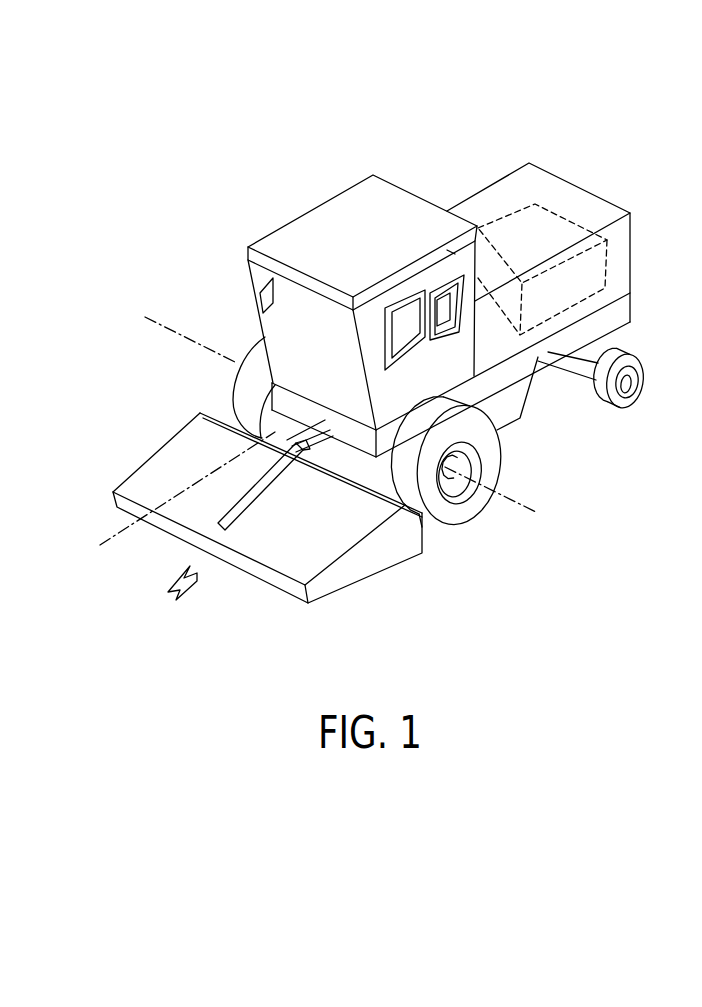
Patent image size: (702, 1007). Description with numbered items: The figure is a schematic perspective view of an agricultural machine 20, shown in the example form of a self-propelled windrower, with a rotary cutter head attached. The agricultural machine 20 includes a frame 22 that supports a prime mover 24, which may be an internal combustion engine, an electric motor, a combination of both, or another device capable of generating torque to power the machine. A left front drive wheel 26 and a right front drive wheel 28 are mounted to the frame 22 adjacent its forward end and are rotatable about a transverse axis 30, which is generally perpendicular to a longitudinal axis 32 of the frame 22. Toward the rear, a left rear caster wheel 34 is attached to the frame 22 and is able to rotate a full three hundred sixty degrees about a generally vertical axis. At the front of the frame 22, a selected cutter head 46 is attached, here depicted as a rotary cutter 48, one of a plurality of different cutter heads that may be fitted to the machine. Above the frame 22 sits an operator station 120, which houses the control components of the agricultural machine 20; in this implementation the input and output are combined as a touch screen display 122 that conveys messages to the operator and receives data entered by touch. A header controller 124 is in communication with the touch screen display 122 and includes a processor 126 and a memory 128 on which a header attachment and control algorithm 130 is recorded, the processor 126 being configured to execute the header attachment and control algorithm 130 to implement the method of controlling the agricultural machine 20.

The agricultural machine 20 is at (278, 82).
The frame 22 is at (538, 356).
The prime mover 24 is at (569, 215).
The left front drive wheel 26 is at (443, 513).
The right front drive wheel 28 is at (247, 392).
The transverse axis 30 is at (523, 523).
The longitudinal axis 32 is at (112, 540).
The left rear caster wheel 34 is at (622, 408).
The cutter head 46 is at (263, 583).
The rotary cutter 48 is at (188, 463).
The operator station 120 is at (388, 182).
The touch screen display 122 is at (258, 292).
The header controller 124 is at (398, 340).
The processor 126 is at (385, 362).
The memory 128 is at (447, 342).
The header attachment and control algorithm 130 is at (448, 297).